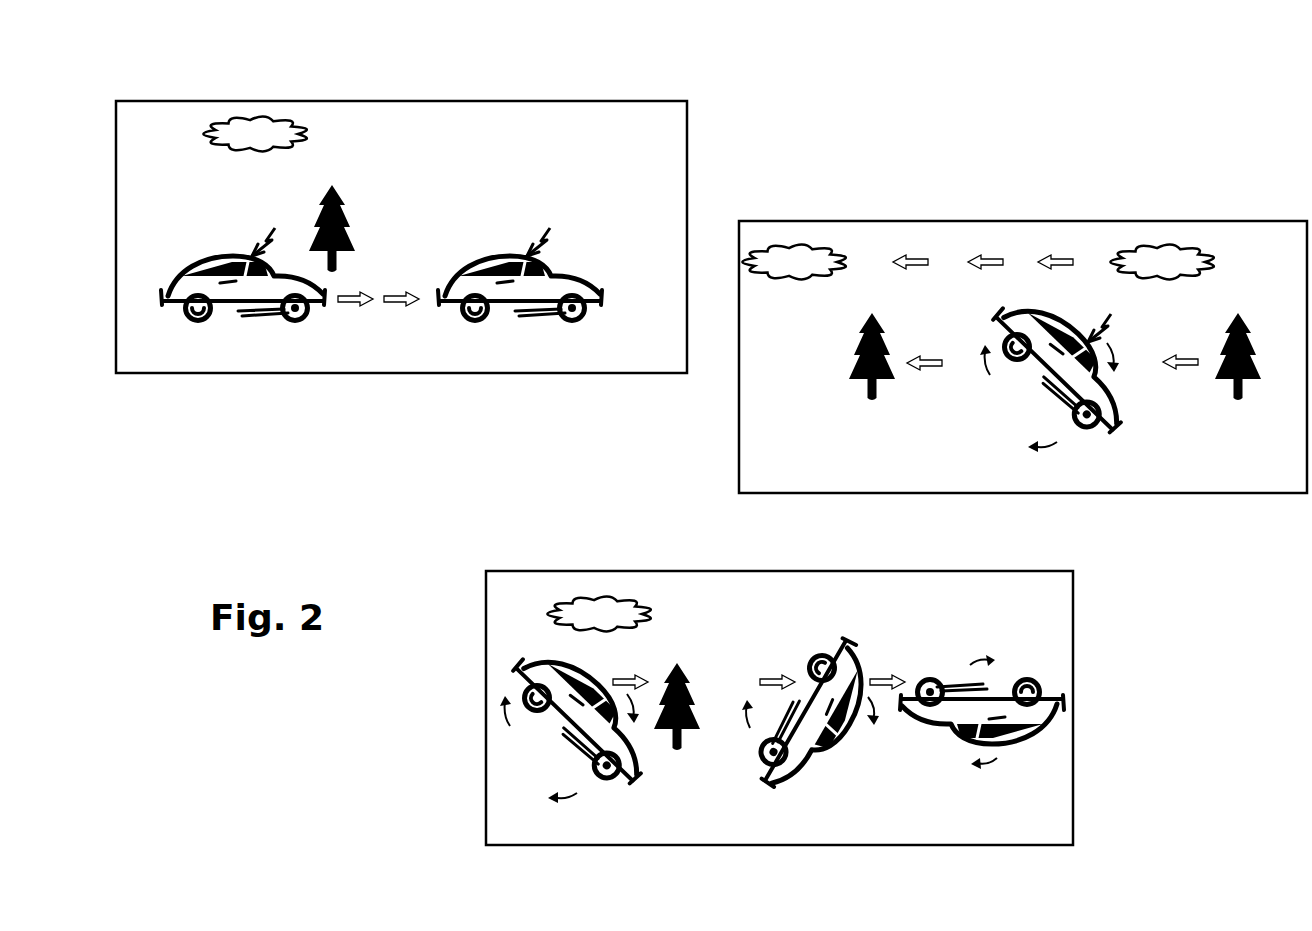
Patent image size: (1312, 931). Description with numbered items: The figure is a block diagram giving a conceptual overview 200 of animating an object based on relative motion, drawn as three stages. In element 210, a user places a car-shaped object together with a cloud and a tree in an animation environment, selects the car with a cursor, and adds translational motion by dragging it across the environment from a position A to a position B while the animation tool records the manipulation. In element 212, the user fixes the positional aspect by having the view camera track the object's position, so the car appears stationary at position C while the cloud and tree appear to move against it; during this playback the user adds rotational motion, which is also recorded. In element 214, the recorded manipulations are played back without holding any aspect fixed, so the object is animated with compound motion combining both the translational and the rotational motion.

The conceptual overview 200 is at (178, 67).
The element 210 is at (391, 393).
The element 212 is at (710, 410).
The element 214 is at (462, 758).